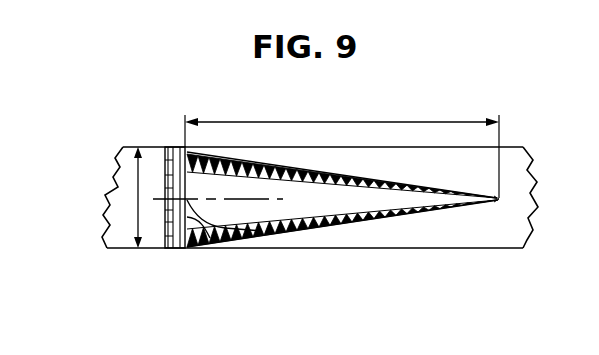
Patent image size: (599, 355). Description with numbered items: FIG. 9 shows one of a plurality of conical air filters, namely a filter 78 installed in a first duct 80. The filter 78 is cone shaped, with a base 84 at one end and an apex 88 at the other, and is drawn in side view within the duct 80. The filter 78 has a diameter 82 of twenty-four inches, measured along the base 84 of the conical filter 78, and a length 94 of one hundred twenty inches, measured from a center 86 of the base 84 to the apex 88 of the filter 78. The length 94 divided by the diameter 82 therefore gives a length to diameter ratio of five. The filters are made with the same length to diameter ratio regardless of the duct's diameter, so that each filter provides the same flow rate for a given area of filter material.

The filter 78 is at (413, 215).
The first duct 80 is at (354, 250).
The diameter 82 is at (135, 190).
The base 84 is at (188, 248).
The center 86 is at (263, 233).
The apex 88 is at (499, 201).
The length 94 is at (393, 122).